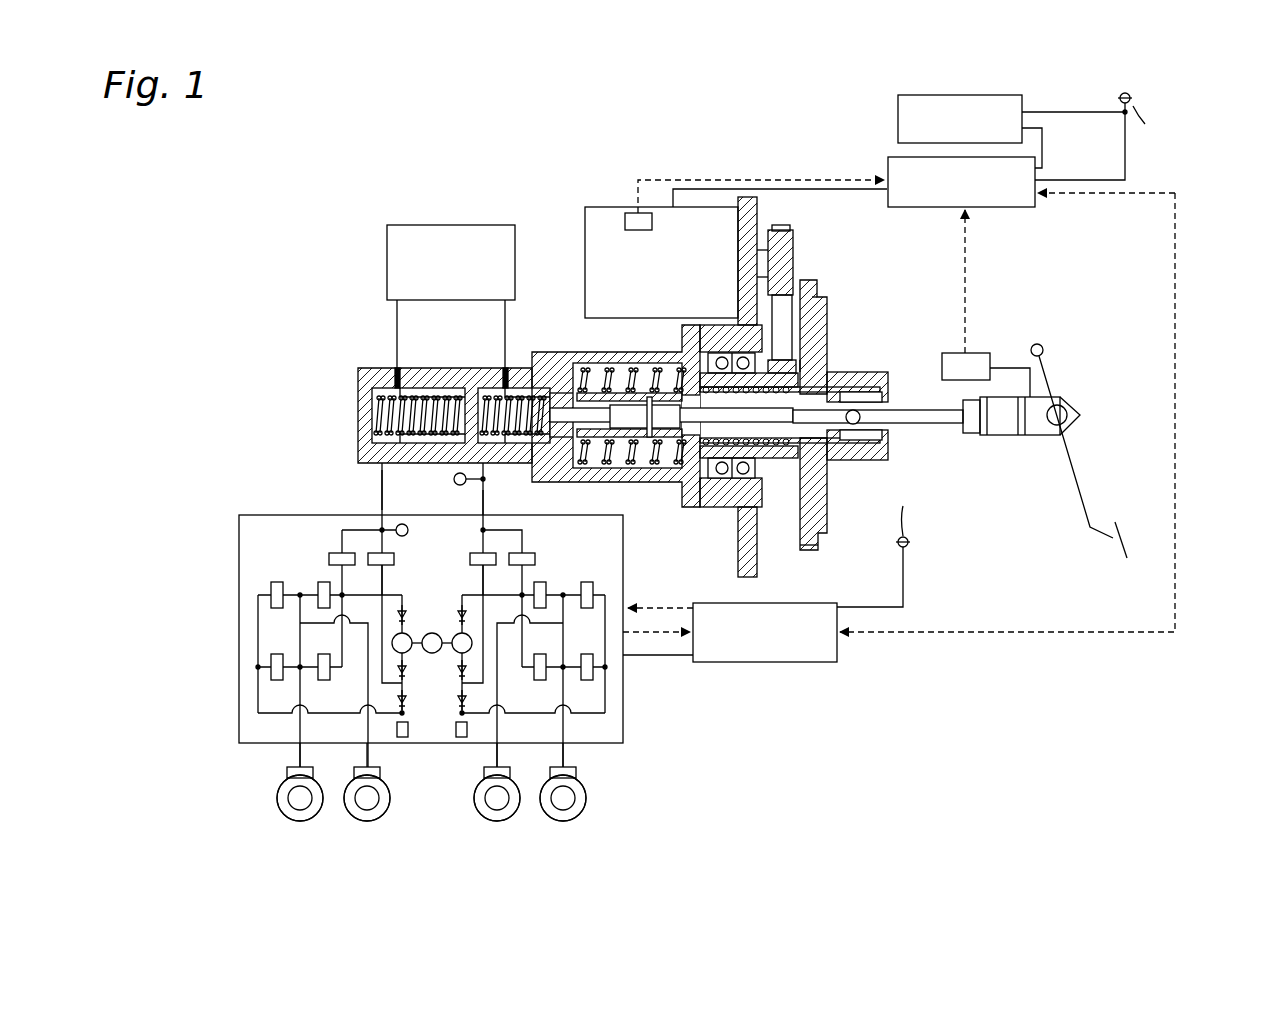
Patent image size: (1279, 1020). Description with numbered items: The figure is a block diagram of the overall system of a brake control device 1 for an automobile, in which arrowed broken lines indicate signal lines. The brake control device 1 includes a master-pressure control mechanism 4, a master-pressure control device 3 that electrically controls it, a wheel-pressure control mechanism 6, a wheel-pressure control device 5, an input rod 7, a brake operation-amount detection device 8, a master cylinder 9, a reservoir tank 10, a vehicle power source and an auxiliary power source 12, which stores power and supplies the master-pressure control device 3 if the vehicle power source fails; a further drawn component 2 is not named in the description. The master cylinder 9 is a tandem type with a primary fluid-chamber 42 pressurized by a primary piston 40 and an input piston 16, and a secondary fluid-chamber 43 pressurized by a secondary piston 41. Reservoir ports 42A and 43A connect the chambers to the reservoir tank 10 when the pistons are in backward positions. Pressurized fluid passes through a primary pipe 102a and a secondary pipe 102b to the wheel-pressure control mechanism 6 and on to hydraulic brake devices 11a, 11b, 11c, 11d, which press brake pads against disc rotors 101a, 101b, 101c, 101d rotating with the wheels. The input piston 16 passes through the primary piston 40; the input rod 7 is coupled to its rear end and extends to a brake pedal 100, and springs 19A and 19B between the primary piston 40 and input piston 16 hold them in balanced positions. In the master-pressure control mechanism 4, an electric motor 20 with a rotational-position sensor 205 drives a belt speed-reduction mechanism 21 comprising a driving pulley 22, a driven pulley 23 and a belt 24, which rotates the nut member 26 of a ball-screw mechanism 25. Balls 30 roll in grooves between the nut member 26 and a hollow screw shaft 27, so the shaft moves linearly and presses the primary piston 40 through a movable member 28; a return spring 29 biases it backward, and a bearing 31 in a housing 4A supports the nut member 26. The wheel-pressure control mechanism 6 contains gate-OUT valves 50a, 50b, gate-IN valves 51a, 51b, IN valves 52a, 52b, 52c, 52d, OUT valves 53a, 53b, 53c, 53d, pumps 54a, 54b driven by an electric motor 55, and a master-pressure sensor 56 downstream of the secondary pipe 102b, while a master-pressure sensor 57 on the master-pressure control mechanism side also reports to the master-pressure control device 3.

The brake control device 1 is at (742, 170).
The brake control system 2 is at (1015, 632).
The master-pressure control device 3 is at (888, 168).
The master-pressure control mechanism 4 is at (747, 399).
The housing 4A is at (830, 540).
The wheel-pressure control device 5 is at (740, 662).
The wheel-pressure control mechanism 6 is at (570, 515).
The input rod 7 is at (932, 427).
The brake operation-amount detection device 8 is at (969, 352).
The master cylinder 9 is at (416, 380).
The reservoir tank 10 is at (455, 225).
The hydraulic brake device 11a is at (510, 777).
The hydraulic brake device 11b is at (355, 774).
The hydraulic brake device 11c is at (287, 772).
The hydraulic brake device 11d is at (576, 772).
The auxiliary power source 12 is at (898, 125).
The input piston 16 is at (645, 433).
The spring 19A is at (620, 430).
The spring 19B is at (683, 433).
The electric motor 20 is at (598, 208).
The belt speed-reduction mechanism 21 is at (815, 284).
The driving pulley 22 is at (795, 267).
The driven pulley 23 is at (806, 530).
The belt 24 is at (784, 228).
The ball-screw mechanism 25 is at (765, 520).
The nut member 26 is at (800, 370).
The screw shaft 27 is at (840, 380).
The movable member 28 is at (705, 500).
The return spring 29 is at (617, 363).
The balls 30 is at (816, 300).
The bearing 31 is at (722, 510).
The primary piston 40 is at (548, 352).
The secondary piston 41 is at (453, 400).
The primary fluid-chamber 42 is at (497, 529).
The reservoir port 42A is at (505, 370).
The secondary fluid-chamber 43 is at (392, 529).
The reservoir port 43A is at (397, 370).
The gate-OUT valve 50a is at (528, 553).
The gate-OUT valve 50b is at (336, 554).
The gate-IN valve 51a is at (472, 553).
The gate-IN valve 51b is at (390, 567).
The IN valve 52a is at (545, 582).
The IN valve 52b is at (318, 582).
The IN valve 52c is at (324, 680).
The IN valve 52d is at (535, 678).
The OUT valve 53a is at (587, 582).
The OUT valve 53b is at (272, 582).
The OUT valve 53c is at (283, 656).
The OUT valve 53d is at (582, 655).
The pump 54a is at (459, 656).
The pump 54b is at (405, 653).
The electric motor 55 is at (432, 634).
The master-pressure sensor 56 is at (405, 534).
The master-pressure sensor 57 is at (453, 480).
The brake pedal 100 is at (1082, 485).
The disc rotor 101a is at (475, 788).
The disc rotor 101b is at (390, 798).
The disc rotor 101c is at (278, 804).
The disc rotor 101d is at (586, 802).
The primary pipe 102a is at (482, 505).
The secondary pipe 102b is at (380, 490).
The rotational-position sensor 205 is at (637, 212).